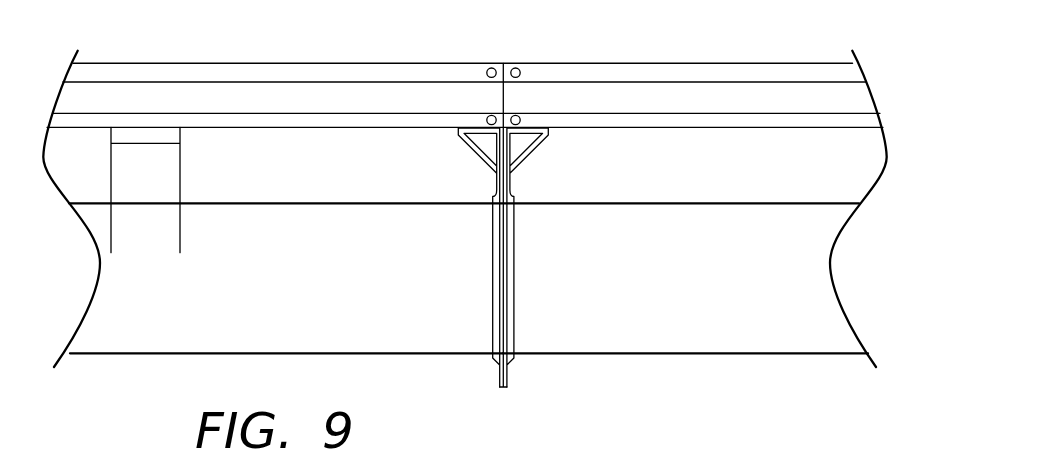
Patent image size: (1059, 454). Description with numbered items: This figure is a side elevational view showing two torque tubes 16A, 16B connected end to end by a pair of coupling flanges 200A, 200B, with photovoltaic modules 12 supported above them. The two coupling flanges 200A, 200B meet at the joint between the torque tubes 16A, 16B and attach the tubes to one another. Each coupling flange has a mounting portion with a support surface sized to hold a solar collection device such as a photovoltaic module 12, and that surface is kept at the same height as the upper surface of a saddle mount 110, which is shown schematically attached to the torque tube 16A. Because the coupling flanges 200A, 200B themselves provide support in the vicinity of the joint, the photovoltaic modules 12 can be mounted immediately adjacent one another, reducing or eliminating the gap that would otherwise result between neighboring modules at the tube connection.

The photovoltaic module 12 is at (428, 48).
The saddle mount 110 is at (191, 175).
The coupling flange 200A is at (480, 180).
The coupling flange 200B is at (526, 180).
The torque tube 16A is at (344, 361).
The torque tube 16B is at (676, 361).